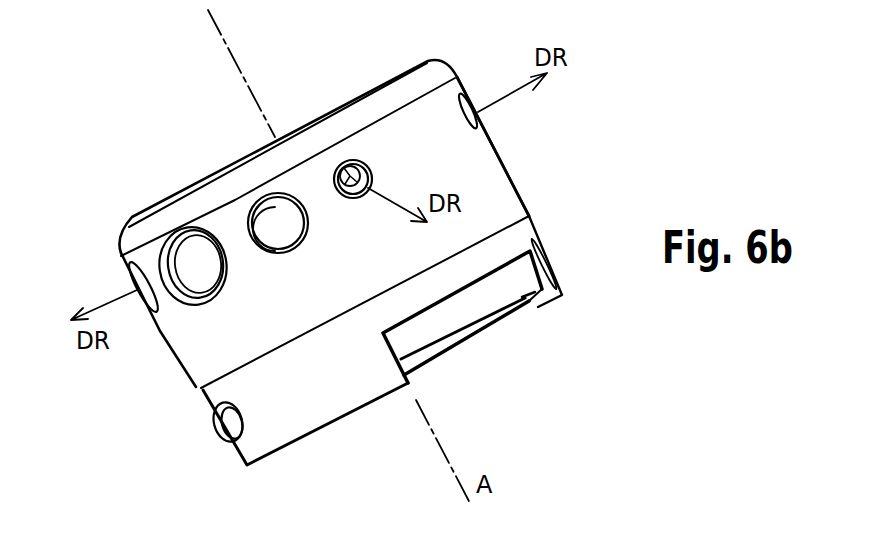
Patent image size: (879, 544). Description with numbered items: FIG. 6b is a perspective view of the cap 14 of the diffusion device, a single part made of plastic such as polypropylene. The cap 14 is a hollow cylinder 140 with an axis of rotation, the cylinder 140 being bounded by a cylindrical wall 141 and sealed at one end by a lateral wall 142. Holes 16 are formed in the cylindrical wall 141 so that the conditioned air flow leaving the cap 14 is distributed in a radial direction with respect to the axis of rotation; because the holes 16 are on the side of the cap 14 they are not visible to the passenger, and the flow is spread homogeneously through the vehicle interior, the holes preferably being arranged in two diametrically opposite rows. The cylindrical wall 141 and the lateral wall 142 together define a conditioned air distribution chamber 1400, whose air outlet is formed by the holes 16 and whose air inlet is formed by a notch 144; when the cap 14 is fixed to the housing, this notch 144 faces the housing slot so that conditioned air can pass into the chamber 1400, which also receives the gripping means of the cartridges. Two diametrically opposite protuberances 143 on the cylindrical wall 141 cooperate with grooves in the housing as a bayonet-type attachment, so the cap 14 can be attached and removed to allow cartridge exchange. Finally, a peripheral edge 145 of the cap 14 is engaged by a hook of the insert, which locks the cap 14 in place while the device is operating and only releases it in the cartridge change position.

The cap 14 is at (133, 410).
The holes 16 is at (256, 200).
The hollow cylinder 140 is at (348, 419).
The cylindrical wall 141 is at (496, 150).
The lateral wall 142 is at (347, 103).
The protuberance 143 is at (223, 427).
The notch 144 is at (493, 275).
The peripheral edge 145 is at (537, 297).
The conditioned air distribution chamber 1400 is at (507, 334).